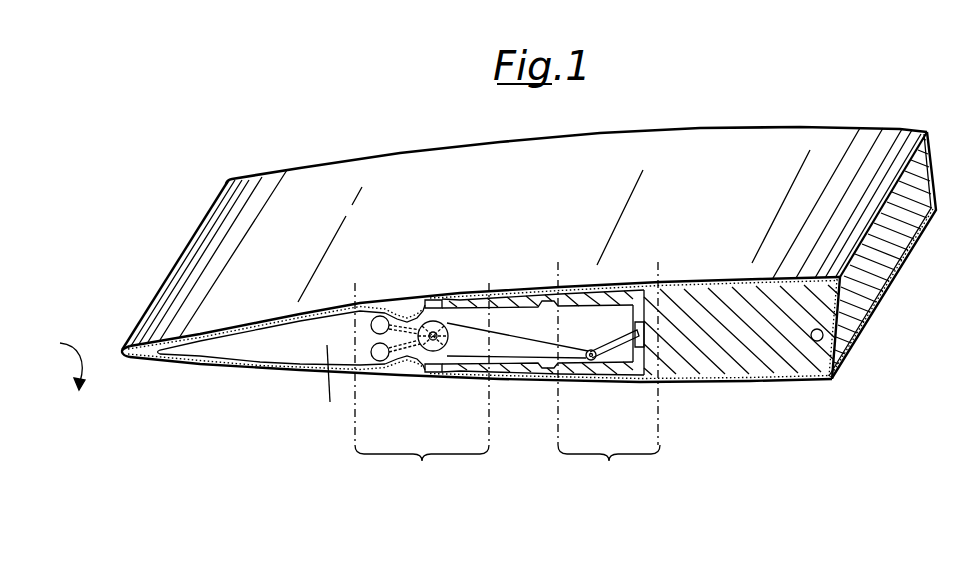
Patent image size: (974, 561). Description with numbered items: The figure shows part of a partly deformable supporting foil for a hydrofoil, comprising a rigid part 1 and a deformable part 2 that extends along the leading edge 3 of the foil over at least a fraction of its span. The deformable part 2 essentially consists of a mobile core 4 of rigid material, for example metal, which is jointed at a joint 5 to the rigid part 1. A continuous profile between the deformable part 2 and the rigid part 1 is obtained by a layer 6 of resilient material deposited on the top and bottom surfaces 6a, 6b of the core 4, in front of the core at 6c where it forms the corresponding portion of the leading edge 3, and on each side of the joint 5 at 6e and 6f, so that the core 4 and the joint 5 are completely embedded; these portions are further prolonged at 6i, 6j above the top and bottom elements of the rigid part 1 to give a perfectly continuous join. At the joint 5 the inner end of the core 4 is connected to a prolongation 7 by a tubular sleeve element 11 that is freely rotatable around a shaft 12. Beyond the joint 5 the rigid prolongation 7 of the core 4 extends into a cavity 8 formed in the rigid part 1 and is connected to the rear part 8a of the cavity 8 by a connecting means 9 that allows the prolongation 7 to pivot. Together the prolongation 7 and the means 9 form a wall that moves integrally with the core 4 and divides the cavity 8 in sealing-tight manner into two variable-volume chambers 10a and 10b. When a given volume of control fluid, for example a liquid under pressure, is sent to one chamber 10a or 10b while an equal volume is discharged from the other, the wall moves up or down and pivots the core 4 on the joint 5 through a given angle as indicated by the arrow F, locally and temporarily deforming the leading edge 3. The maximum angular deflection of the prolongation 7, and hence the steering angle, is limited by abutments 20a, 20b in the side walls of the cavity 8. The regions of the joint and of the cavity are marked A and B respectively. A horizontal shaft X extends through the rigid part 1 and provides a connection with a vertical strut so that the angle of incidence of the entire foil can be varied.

The rigid part 1 is at (533, 392).
The deformable part 2 is at (278, 386).
The leading edge 3 is at (183, 252).
The mobile core 4 is at (327, 389).
The joint 5 is at (412, 307).
The layer of resilient material 6 is at (282, 310).
The top surface of core 6a is at (228, 327).
The bottom surface of core 6b is at (223, 362).
The front resilient portion 6c is at (138, 354).
The resilient layer portion at joint 6e is at (402, 312).
The resilient layer portion at joint 6f is at (405, 366).
The top prolongation of resilient layer 6i is at (498, 294).
The bottom prolongation of resilient layer 6j is at (461, 372).
The prolongation 7 is at (499, 342).
The cavity 8 is at (597, 296).
The rear part of cavity 8a is at (634, 321).
The connecting means 9 is at (597, 361).
The variable-volume chamber 10a is at (593, 333).
The variable-volume chamber 10b is at (510, 362).
The tubular sleeve element 11 is at (420, 310).
The shaft 12 is at (437, 321).
The abutment 20a is at (543, 300).
The abutment 20b is at (550, 368).
The region A is at (422, 388).
The region B is at (609, 375).
The horizontal shaft X is at (823, 340).
The arrow F is at (61, 361).